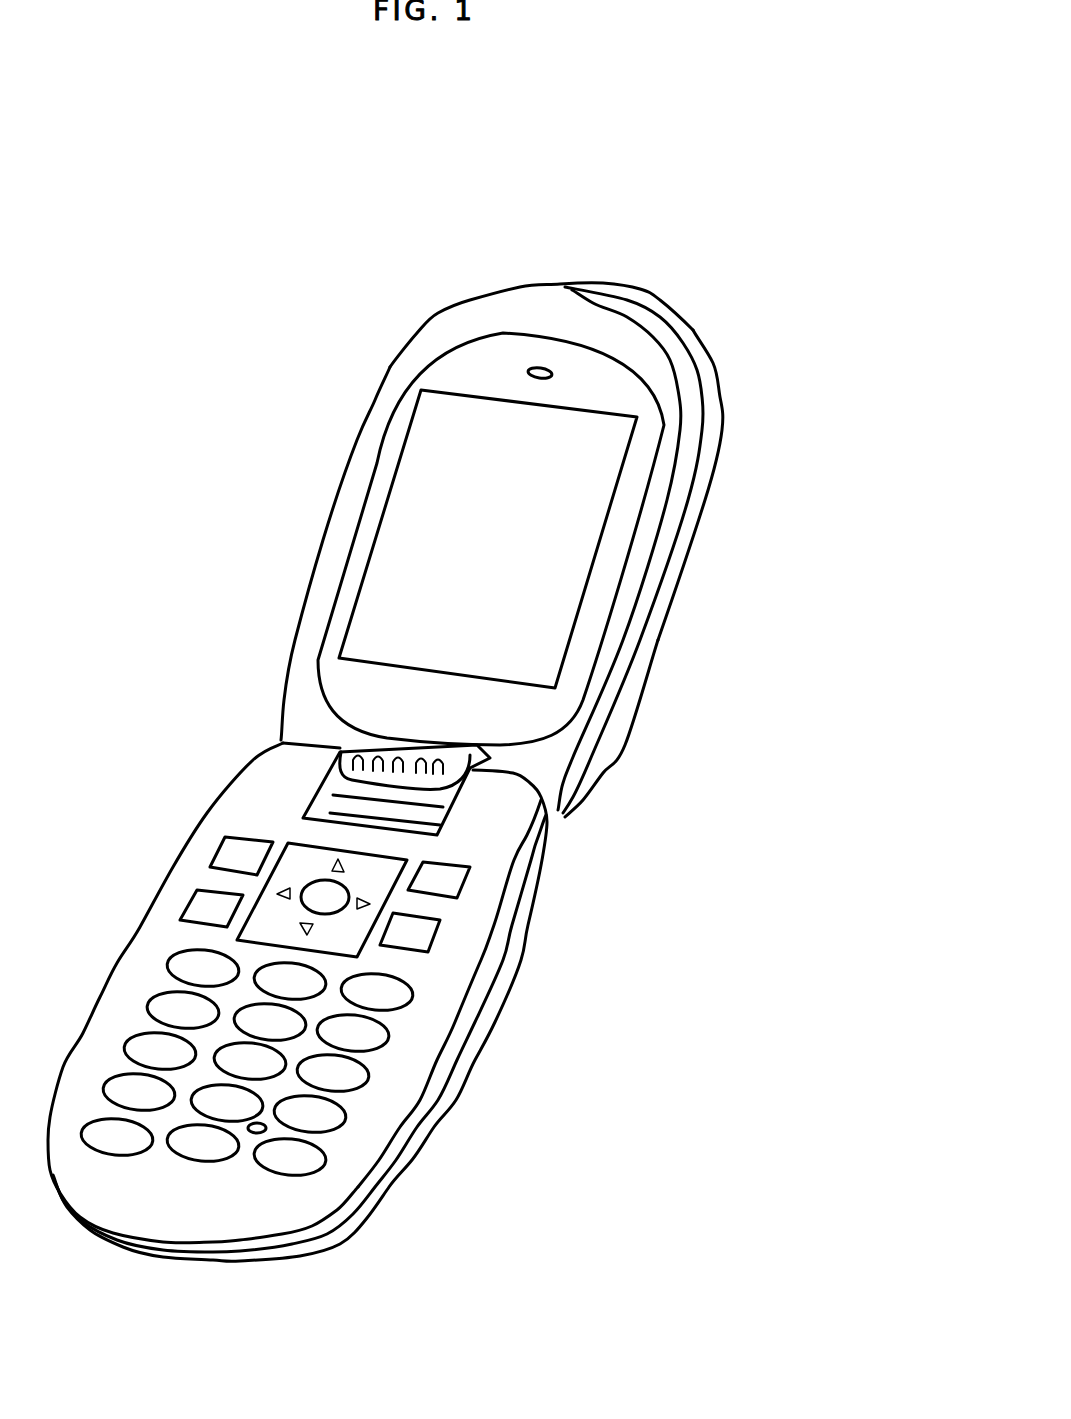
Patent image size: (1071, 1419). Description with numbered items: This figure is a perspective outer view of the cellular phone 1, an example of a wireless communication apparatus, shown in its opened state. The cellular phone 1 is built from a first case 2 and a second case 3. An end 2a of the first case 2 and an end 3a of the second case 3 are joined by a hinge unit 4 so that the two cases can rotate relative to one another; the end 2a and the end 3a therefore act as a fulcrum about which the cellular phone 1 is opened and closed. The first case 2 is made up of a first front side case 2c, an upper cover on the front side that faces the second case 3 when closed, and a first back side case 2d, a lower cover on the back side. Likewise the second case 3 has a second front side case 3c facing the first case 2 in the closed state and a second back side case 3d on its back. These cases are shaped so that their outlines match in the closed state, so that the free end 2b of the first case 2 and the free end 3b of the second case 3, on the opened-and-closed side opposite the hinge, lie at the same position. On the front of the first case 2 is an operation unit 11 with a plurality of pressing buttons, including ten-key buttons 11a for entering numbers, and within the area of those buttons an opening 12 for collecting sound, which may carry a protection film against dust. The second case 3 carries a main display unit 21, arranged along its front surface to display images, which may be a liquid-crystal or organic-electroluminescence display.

The cellular phone 1 is at (920, 284).
The first case 2 is at (364, 1050).
The end of the first case 2a is at (505, 808).
The end of the first case 2b is at (217, 1212).
The first front side case 2c is at (503, 922).
The first back side case 2d is at (503, 968).
The second case 3 is at (558, 520).
The end of the second case 3a is at (550, 762).
The end of the second case 3b is at (558, 307).
The second front side case 3c is at (670, 532).
The second back side case 3d is at (678, 573).
The hinge unit 4 is at (443, 793).
The operation unit 11 is at (362, 1032).
The ten-key buttons 11a is at (413, 1139).
The opening 12 is at (263, 1130).
The main display unit 21 is at (593, 450).